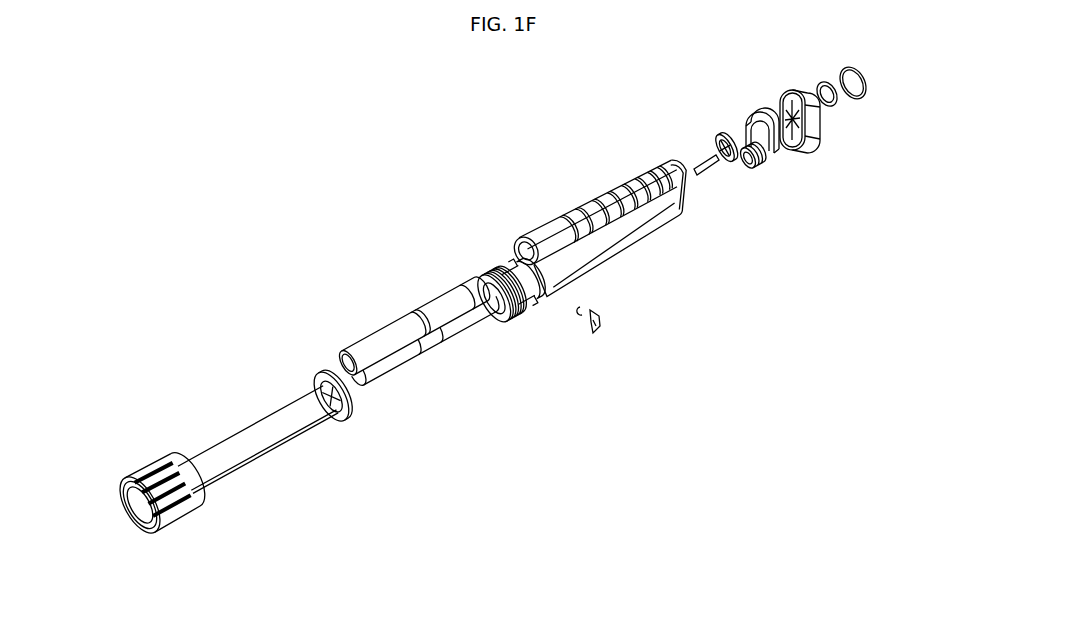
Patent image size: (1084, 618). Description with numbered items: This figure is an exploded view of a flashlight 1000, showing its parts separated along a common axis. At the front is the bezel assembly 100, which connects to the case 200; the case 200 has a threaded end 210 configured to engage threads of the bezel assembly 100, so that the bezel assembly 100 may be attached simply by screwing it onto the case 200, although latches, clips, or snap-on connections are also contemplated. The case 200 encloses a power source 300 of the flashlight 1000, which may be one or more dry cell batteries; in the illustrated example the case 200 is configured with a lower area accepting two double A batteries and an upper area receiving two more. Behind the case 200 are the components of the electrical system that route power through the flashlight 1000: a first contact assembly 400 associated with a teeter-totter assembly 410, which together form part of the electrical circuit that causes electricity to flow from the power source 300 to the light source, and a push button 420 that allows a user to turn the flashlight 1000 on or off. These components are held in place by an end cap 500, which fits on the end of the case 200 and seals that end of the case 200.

The flashlight 1000 is at (309, 190).
The bezel assembly 100 is at (155, 457).
The case 200 is at (536, 229).
The threaded end 210 is at (515, 318).
The power source 300 is at (432, 307).
The first contact assembly 400 is at (715, 141).
The teeter-totter assembly 410 is at (767, 164).
The push button 420 is at (841, 109).
The end cap 500 is at (812, 144).